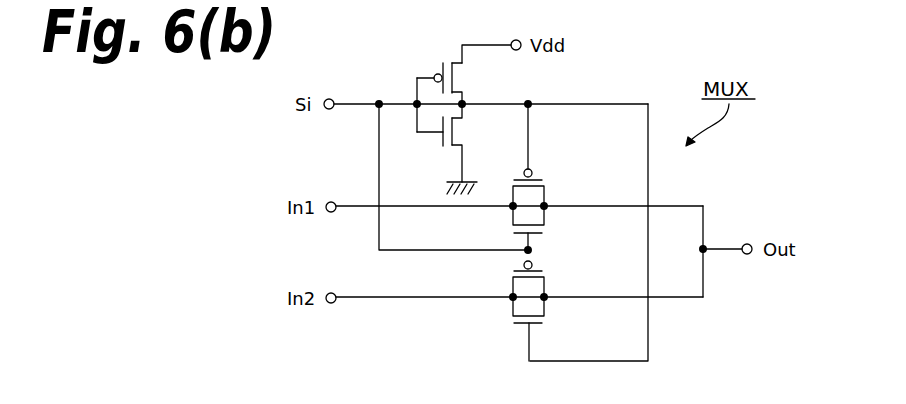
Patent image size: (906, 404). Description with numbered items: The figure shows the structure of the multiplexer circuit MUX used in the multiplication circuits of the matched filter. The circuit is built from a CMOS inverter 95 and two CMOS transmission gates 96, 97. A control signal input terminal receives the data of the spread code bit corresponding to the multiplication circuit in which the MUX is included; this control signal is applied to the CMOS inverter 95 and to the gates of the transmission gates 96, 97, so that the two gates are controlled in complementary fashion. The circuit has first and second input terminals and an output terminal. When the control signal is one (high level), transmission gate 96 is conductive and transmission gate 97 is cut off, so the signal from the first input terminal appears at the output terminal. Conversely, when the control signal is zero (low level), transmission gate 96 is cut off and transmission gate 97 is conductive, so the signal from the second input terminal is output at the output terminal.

The CMOS inverter 95 is at (431, 69).
The CMOS transmission gate 96 is at (587, 170).
The CMOS transmission gate 97 is at (507, 331).